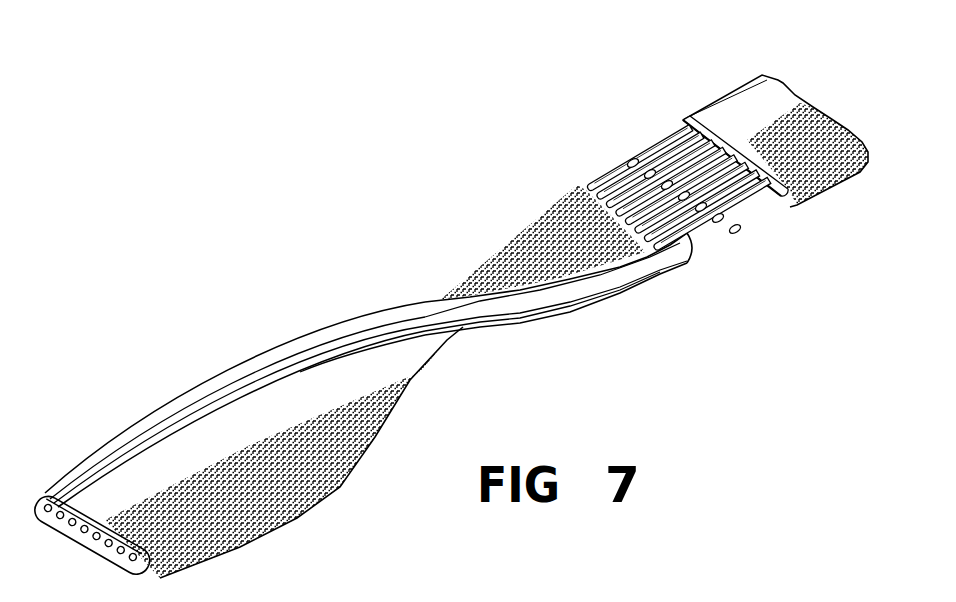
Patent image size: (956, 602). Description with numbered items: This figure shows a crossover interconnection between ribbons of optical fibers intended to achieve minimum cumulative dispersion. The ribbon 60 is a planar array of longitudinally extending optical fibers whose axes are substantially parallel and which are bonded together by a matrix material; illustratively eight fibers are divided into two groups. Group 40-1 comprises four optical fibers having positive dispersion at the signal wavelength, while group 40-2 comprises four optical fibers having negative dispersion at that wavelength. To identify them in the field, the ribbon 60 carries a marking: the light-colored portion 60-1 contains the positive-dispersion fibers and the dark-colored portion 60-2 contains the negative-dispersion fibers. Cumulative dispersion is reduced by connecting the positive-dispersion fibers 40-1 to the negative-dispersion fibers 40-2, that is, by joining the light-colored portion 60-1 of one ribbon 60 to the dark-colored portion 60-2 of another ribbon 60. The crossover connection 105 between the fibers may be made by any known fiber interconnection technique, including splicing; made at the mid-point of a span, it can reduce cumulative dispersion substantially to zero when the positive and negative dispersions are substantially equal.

The ribbon 60 is at (301, 318).
The light-colored portion 60-1 is at (637, 278).
The dark-colored portion 60-2 is at (817, 183).
The group of optical fibers having positive dispersion 40-1 is at (723, 157).
The group of optical fibers having negative dispersion 40-2 is at (620, 166).
The crossover connection 105 is at (677, 196).